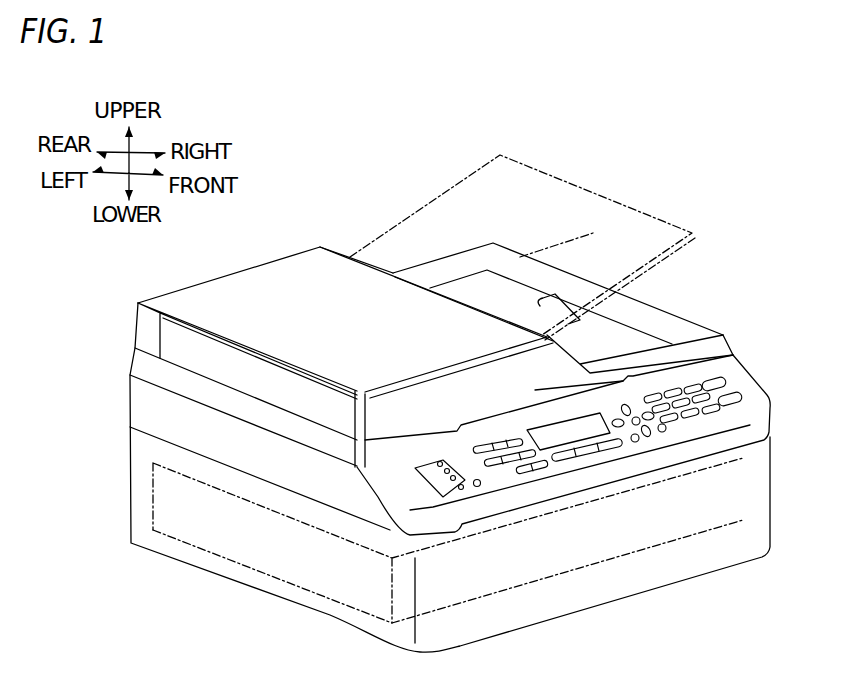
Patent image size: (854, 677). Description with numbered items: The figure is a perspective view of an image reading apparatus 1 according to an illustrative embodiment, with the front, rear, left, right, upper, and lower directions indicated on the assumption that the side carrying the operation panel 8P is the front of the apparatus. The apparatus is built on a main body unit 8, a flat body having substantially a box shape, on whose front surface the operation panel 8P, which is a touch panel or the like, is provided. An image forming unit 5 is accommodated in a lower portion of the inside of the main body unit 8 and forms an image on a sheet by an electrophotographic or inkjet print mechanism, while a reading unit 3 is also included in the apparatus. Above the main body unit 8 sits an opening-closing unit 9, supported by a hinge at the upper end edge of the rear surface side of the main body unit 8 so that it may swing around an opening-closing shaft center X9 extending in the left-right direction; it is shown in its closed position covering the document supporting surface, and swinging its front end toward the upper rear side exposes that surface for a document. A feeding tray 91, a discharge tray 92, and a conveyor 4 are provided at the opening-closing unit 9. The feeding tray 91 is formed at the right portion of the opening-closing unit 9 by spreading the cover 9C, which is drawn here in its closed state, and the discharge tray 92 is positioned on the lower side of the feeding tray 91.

The image reading apparatus 1 is at (698, 185).
The reading unit 3 is at (262, 455).
The conveyor 4 is at (267, 303).
The image forming unit 5 is at (298, 562).
The main body unit 8 is at (118, 506).
The operation panel 8P is at (563, 430).
The opening-closing unit 9 is at (118, 318).
The cover 9C is at (477, 187).
The feeding tray 91 is at (533, 202).
The discharge tray 92 is at (596, 337).
The opening-closing shaft center X9 is at (130, 372).